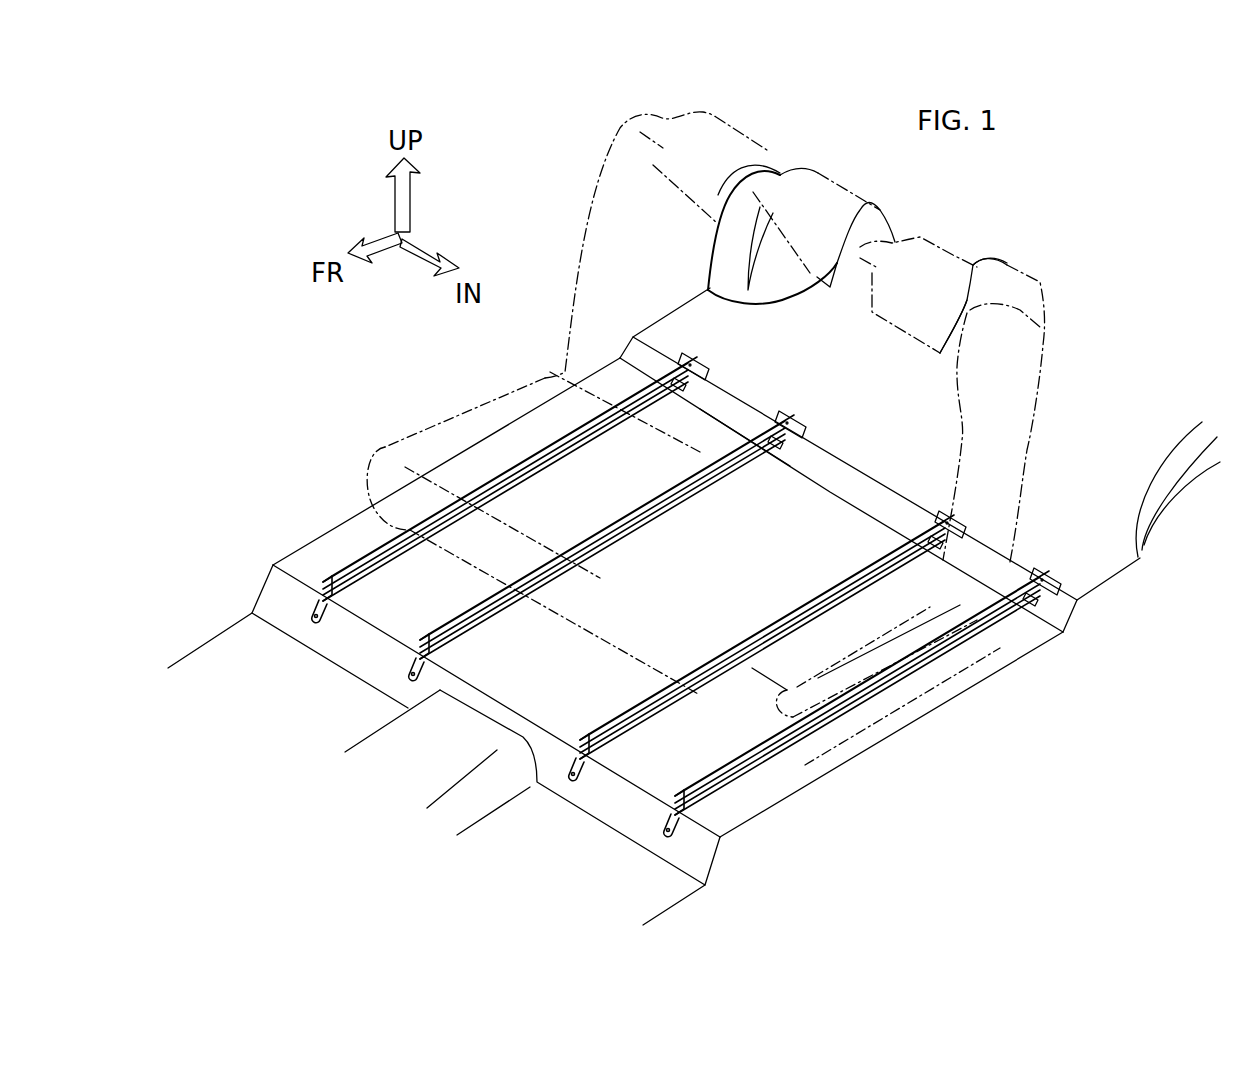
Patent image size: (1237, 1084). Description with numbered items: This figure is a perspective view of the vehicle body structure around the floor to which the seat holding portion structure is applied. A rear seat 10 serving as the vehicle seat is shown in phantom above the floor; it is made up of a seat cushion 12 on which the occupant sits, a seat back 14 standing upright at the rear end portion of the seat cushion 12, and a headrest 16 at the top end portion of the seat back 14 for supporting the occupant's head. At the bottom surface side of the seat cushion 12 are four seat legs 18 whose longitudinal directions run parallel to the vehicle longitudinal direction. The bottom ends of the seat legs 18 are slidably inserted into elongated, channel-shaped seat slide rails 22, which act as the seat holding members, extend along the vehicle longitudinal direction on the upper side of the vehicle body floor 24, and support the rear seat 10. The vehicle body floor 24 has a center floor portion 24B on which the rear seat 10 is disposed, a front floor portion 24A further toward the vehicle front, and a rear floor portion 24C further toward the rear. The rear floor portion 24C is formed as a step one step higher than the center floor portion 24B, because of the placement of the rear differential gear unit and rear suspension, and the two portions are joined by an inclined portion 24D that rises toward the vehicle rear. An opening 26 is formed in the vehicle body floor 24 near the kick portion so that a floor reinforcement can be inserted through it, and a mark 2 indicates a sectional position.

The rear seat 10 is at (1103, 321).
The seat cushion 12 is at (922, 683).
The seat back 14 is at (1003, 455).
The headrest 16 is at (1003, 262).
The seat legs 18 is at (410, 530).
The section line for FIG. 2 is at (1058, 548).
The seat slide rails 22 is at (354, 593).
The vehicle body floor 24 is at (481, 472).
The front floor portion 24A is at (238, 640).
The center floor portion 24B is at (343, 537).
The rear floor portion 24C is at (658, 342).
The inclined portion 24D is at (747, 425).
The opening 26 is at (690, 398).